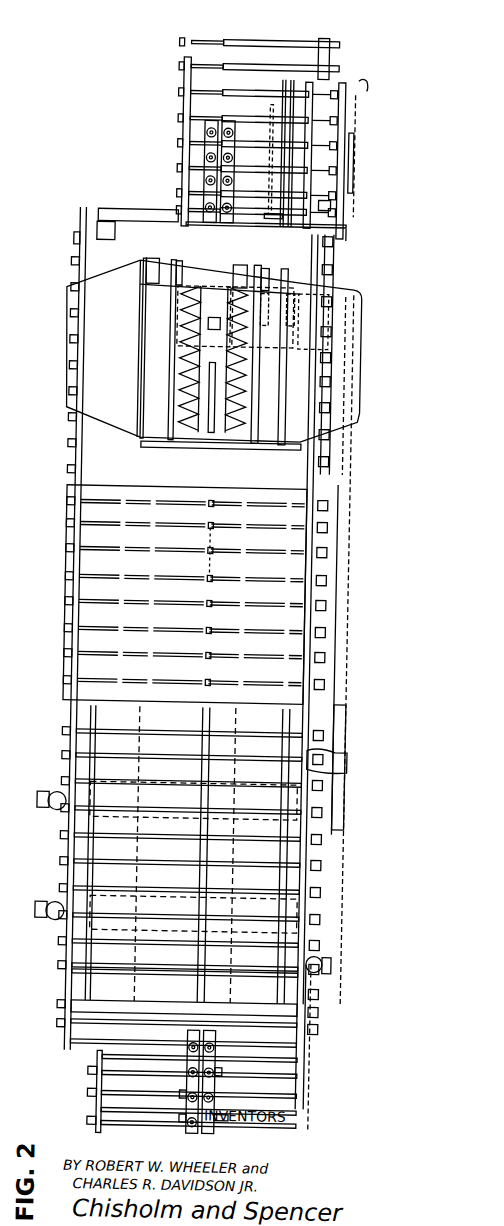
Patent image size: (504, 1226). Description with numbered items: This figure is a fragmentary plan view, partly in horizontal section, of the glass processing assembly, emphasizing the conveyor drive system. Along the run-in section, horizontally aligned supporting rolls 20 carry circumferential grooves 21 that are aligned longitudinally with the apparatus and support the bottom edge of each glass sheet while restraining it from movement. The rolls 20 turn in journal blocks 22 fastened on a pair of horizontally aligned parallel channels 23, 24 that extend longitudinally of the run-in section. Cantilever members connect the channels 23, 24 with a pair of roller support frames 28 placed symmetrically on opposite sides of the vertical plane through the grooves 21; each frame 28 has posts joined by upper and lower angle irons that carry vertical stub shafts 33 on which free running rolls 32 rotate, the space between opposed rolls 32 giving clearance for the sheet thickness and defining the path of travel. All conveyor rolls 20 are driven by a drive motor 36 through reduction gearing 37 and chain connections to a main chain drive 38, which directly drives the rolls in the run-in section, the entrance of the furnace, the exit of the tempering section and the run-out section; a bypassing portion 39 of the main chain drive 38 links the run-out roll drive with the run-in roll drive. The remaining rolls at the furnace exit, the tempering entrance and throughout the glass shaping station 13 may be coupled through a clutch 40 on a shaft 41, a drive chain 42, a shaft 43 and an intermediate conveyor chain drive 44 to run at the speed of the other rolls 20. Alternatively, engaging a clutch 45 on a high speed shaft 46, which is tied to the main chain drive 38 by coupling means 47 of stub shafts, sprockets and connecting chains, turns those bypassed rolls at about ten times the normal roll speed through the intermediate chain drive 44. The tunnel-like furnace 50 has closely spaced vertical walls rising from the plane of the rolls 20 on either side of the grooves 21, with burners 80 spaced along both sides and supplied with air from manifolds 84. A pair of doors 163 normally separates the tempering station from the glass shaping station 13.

The glass shaping station 13 is at (74, 663).
The supporting rolls 20 is at (297, 1046).
The circumferential grooves 21 is at (219, 971).
The journal blocks 22 is at (106, 1092).
The channel 23 is at (104, 1120).
The channel 24 is at (313, 1090).
The roller support frame 28 is at (202, 1128).
The free running rolls 32 is at (200, 1090).
The vertical stub shafts 33 is at (200, 1062).
The drive motor 36 is at (346, 226).
The reduction gearing 37 is at (360, 72).
The main chain drive 38 is at (321, 210).
The bypassing portion 39 is at (356, 520).
The clutch 40 is at (295, 283).
The shaft 41 is at (292, 329).
The drive chain 42 is at (283, 326).
The shaft 43 is at (256, 330).
The intermediate conveyor chain drive 44 is at (333, 391).
The clutch 45 is at (216, 316).
The high speed shaft 46 is at (196, 327).
The coupling means 47 is at (270, 176).
The furnace 50 is at (74, 855).
The burners 80 is at (68, 787).
The manifolds 84 is at (336, 911).
The doors 163 is at (205, 446).